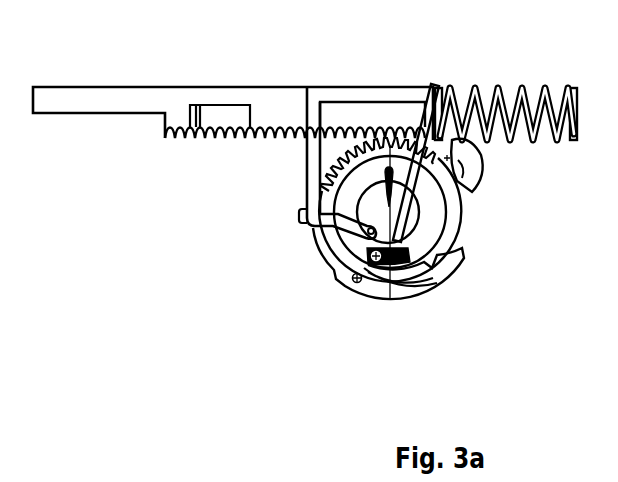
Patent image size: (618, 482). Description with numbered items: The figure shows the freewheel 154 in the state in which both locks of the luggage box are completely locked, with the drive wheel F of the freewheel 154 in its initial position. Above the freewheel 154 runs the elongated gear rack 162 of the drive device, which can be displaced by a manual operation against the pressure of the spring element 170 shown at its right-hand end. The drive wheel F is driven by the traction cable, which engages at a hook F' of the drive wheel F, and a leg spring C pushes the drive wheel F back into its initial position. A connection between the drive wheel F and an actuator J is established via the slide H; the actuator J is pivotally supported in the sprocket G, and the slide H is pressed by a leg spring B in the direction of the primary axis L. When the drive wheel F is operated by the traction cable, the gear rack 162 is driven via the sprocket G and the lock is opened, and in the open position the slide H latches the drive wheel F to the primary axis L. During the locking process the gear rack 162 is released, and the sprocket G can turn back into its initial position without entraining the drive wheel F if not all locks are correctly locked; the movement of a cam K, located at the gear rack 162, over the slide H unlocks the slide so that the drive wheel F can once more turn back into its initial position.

The gear rack 162 is at (175, 118).
The spring element 170 is at (500, 87).
The freewheel 154 is at (328, 303).
The sprocket G is at (386, 173).
The leg spring C is at (485, 212).
The primary axis L is at (368, 229).
The cam K is at (372, 246).
The leg spring B is at (389, 264).
The actuator J is at (417, 273).
The slide H is at (457, 247).
The drive wheel F is at (451, 163).
The hook F' is at (504, 170).